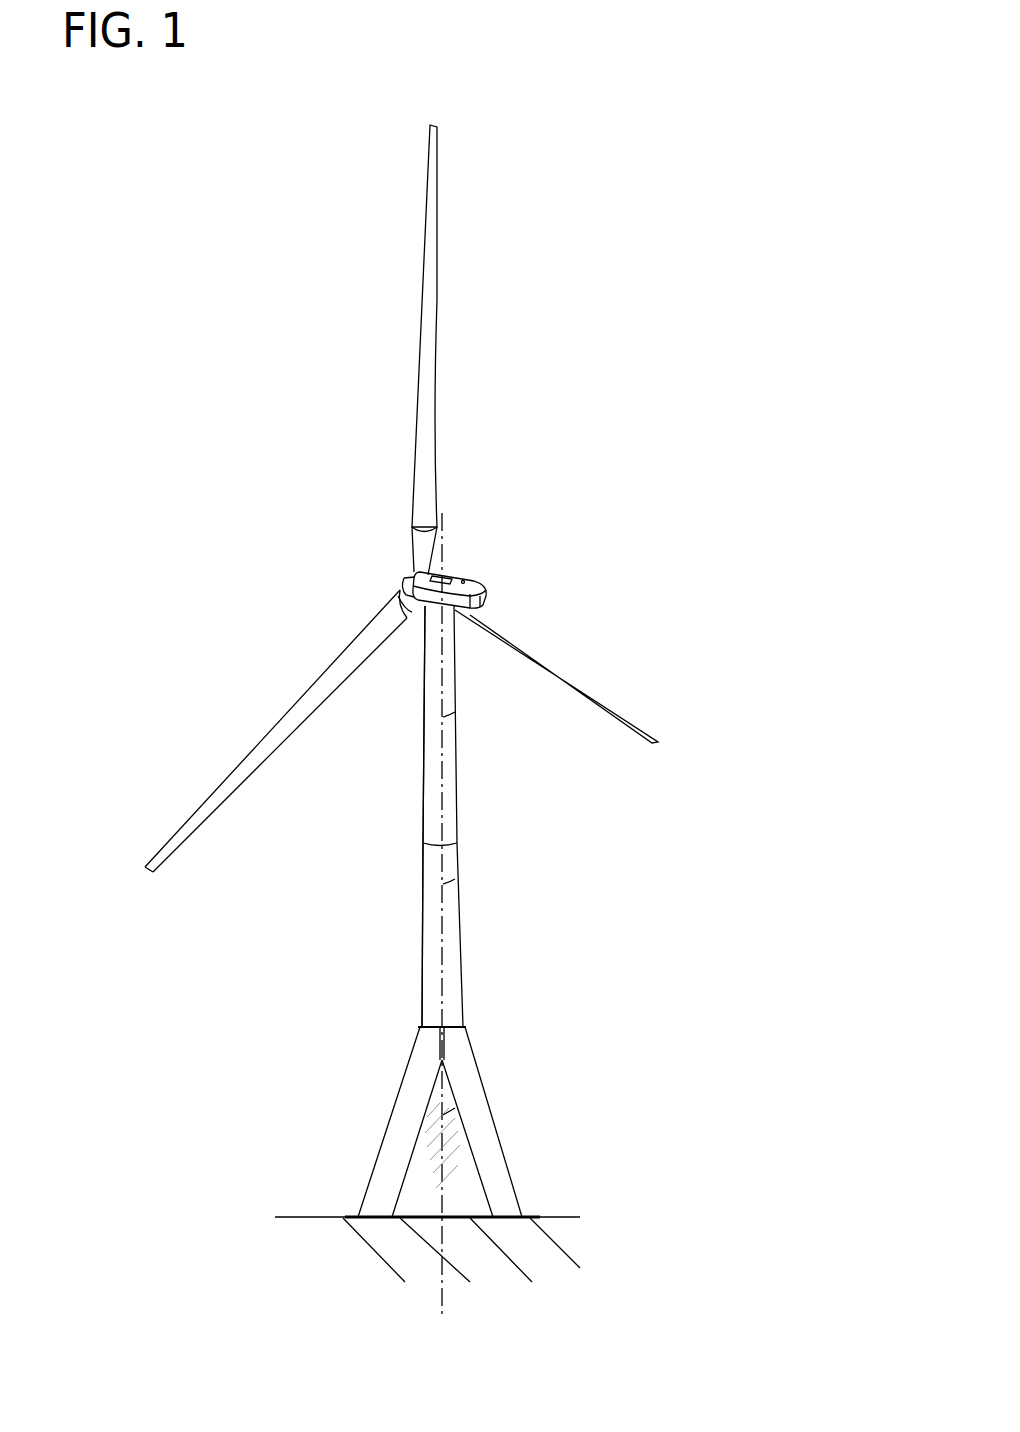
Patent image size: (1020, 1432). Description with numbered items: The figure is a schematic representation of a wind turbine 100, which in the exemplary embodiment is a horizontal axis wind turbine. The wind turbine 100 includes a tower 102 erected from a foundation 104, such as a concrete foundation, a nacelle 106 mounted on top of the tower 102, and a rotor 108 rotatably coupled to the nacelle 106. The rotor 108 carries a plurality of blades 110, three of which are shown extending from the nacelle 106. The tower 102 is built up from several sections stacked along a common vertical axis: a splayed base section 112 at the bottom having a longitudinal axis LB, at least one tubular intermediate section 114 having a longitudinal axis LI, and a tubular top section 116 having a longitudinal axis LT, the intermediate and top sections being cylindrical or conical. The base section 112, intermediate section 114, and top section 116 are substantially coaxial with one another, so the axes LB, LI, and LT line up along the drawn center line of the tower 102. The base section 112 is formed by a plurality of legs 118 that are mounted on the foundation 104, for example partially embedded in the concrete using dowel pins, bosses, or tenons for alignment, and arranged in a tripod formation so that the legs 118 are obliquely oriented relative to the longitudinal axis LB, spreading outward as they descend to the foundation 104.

The wind turbine 100 is at (664, 213).
The tower 102 is at (502, 958).
The foundation 104 is at (327, 1216).
The nacelle 106 is at (490, 576).
The rotor 108 is at (306, 391).
The blades 110 is at (433, 283).
The splayed base section 112 is at (400, 1071).
The intermediate section 114 is at (421, 937).
The top section 116 is at (421, 766).
The legs 118 is at (395, 1147).
The longitudinal axis of top section LT is at (443, 717).
The longitudinal axis of intermediate section LI is at (443, 884).
The longitudinal axis of base section LB is at (443, 1115).